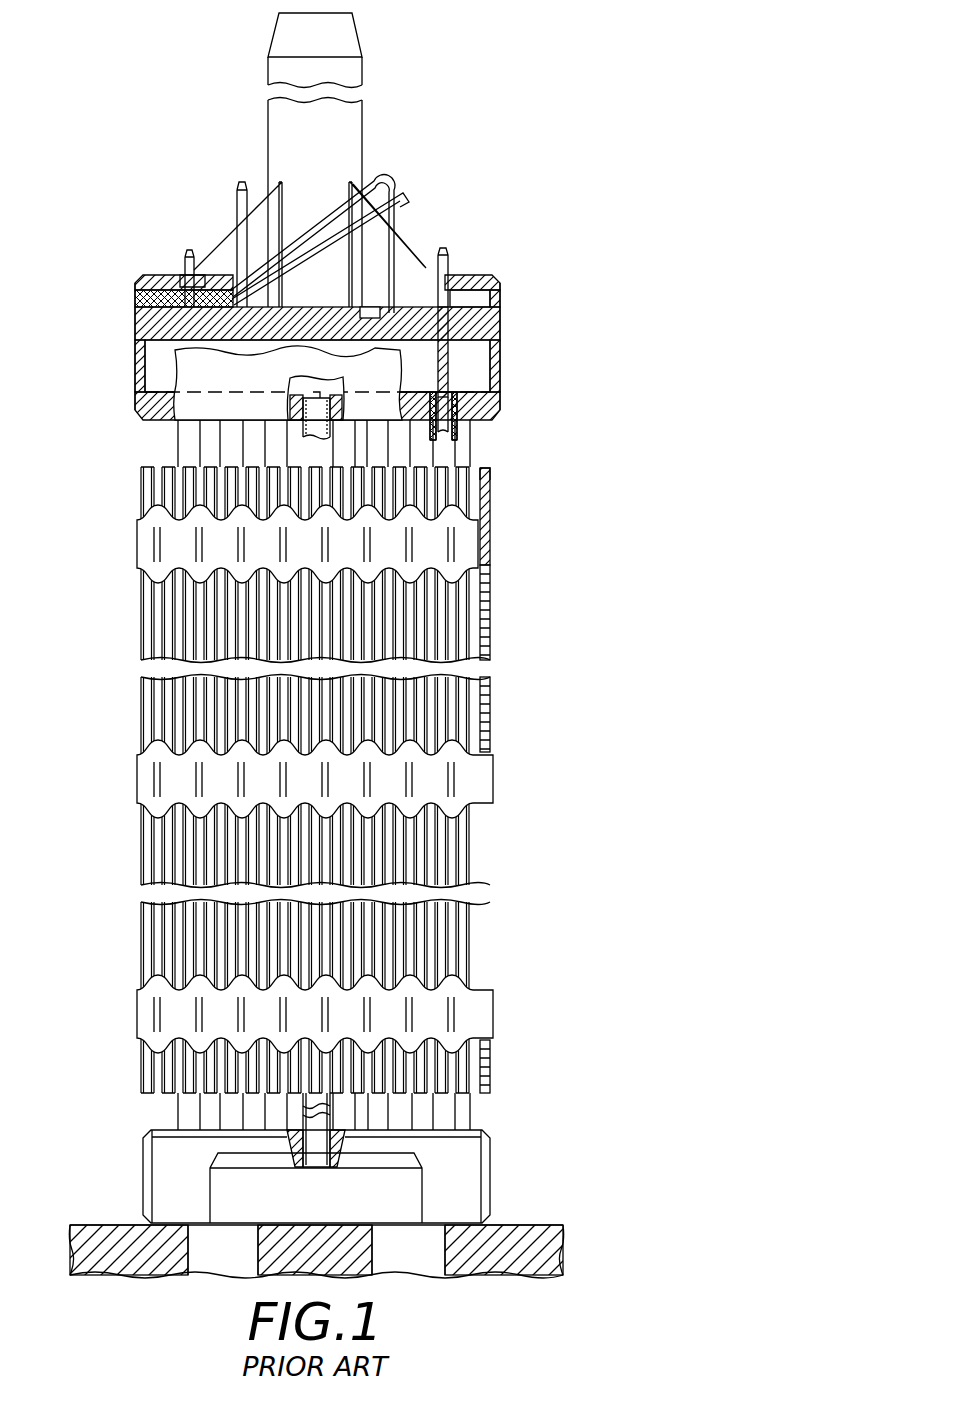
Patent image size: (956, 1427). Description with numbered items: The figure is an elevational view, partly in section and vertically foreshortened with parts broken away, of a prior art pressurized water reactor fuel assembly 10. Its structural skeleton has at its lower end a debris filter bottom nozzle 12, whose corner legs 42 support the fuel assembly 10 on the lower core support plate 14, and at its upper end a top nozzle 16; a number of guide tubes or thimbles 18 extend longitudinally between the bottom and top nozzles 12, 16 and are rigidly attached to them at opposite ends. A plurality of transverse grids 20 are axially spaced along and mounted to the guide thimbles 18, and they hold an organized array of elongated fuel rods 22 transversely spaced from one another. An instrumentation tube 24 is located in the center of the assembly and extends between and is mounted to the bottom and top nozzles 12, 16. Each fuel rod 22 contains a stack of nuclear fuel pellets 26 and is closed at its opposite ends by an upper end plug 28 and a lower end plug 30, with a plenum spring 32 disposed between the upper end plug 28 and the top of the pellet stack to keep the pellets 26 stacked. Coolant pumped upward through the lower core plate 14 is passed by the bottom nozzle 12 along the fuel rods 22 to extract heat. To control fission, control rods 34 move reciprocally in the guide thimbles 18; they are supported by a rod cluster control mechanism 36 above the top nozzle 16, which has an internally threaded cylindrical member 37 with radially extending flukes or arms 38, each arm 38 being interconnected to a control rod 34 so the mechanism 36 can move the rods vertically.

The fuel assembly 10 is at (583, 334).
The debris filter bottom nozzle 12 is at (600, 1118).
The lower core support plate 14 is at (537, 1225).
The top nozzle 16 is at (512, 318).
The guide tubes or thimbles 18 is at (176, 440).
The transverse grids 20 is at (137, 544).
The fuel rods 22 is at (143, 700).
The instrumentation tube 24 is at (318, 1168).
The nuclear fuel pellets 26 is at (490, 597).
The upper end plug 28 is at (497, 470).
The lower end plug 30 is at (491, 1091).
The plenum spring 32 is at (496, 514).
The control rods 34 is at (455, 385).
The rod cluster control mechanism 36 is at (405, 168).
The internally threaded cylindrical member 37 is at (364, 116).
The radially extending flukes or arms 38 is at (205, 266).
The corner legs 42 is at (142, 1162).